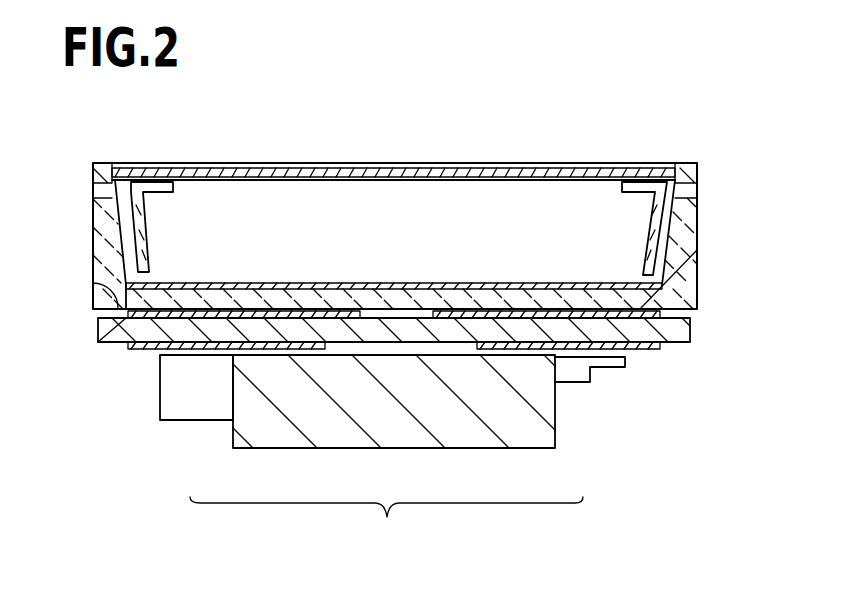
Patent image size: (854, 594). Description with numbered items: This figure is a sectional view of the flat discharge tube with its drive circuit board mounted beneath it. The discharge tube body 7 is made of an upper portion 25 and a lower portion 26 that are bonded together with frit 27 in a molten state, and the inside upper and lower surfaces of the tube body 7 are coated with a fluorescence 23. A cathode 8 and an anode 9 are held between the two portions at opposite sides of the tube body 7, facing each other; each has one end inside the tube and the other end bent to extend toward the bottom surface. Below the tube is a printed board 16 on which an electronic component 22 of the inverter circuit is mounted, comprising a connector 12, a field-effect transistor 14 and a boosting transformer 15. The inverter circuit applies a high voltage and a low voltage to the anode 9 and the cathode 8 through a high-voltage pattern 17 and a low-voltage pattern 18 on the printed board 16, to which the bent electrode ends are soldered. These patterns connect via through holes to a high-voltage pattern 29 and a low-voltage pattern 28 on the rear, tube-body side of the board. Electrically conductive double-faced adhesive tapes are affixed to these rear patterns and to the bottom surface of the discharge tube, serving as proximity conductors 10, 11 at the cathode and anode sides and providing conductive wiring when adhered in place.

The discharge tube body 7 is at (695, 258).
The cathode 8 is at (147, 180).
The anode 9 is at (628, 186).
The proximity conductor 10 is at (116, 287).
The proximity conductor 11 is at (660, 302).
The connector 12 is at (205, 420).
The field-effect transistor 14 is at (575, 383).
The boosting transformer 15 is at (357, 448).
The printed board 16 is at (690, 328).
The high-voltage pattern 17 is at (637, 352).
The low-voltage pattern 18 is at (146, 352).
The electronic component 22 is at (390, 520).
The fluorescence 23 is at (307, 182).
The upper portion 25 is at (697, 172).
The lower portion 26 is at (689, 210).
The frit 27 is at (97, 191).
The low-voltage pattern 28 is at (672, 338).
The high-voltage pattern 29 is at (110, 343).